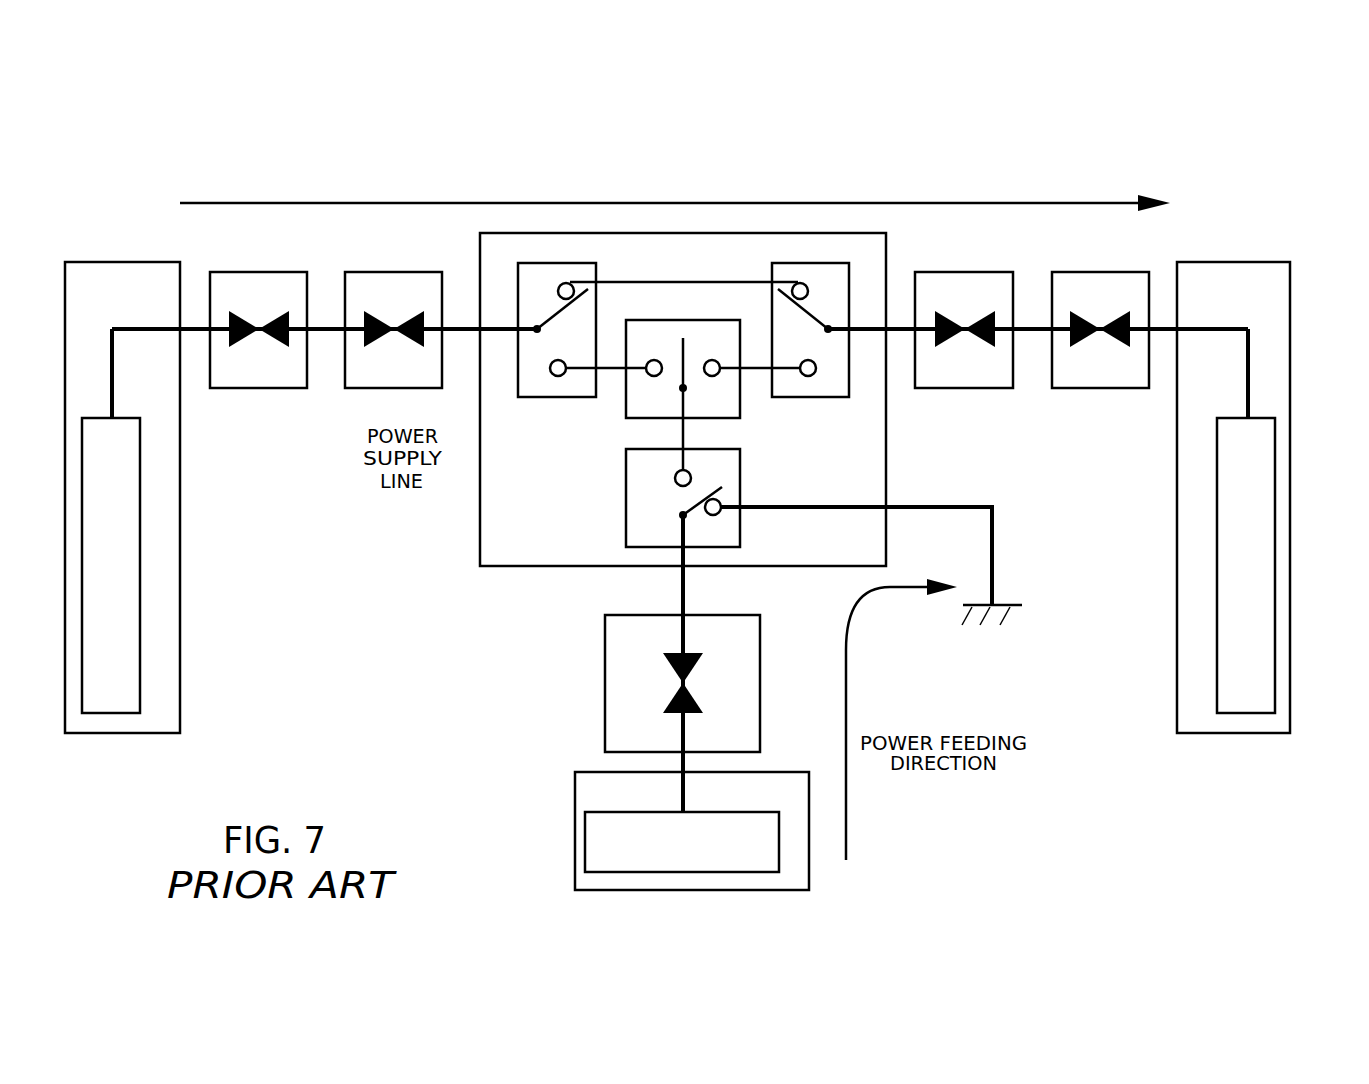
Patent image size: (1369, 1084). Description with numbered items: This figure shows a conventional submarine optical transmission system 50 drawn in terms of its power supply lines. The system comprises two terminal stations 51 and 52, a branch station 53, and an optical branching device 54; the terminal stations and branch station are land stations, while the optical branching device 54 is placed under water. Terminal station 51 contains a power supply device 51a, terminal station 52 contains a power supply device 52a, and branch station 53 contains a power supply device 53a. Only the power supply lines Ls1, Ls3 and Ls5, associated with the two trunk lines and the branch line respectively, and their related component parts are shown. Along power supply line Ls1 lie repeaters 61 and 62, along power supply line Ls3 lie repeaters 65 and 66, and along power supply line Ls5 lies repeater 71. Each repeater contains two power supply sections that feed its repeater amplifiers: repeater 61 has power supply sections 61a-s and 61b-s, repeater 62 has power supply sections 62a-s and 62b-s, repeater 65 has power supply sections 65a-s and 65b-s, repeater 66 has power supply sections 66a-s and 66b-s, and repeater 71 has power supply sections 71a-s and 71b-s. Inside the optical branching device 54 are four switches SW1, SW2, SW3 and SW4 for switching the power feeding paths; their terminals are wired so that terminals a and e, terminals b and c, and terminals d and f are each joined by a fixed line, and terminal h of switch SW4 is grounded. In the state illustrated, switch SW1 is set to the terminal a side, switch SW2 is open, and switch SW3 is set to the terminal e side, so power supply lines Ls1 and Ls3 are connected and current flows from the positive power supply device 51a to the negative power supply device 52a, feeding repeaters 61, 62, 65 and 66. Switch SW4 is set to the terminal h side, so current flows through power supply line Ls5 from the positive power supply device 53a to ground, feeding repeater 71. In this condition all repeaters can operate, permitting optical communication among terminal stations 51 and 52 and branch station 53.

The submarine optical transmission system 50 is at (680, 134).
The terminal station 51 is at (102, 262).
The power supply device 51a is at (160, 417).
The terminal station 52 is at (1188, 260).
The power supply device 52a is at (1215, 438).
The branch station 53 is at (605, 892).
The power supply device 53a is at (730, 810).
The optical branching device 54 is at (480, 509).
The repeater 61 is at (245, 272).
The power supply section 61a-s is at (242, 317).
The power supply section 61b-s is at (274, 338).
The repeater 62 is at (380, 272).
The power supply section 62a-s is at (379, 317).
The power supply section 62b-s is at (409, 338).
The repeater 65 is at (955, 272).
The power supply section 65a-s is at (948, 317).
The power supply section 65b-s is at (980, 338).
The repeater 66 is at (1090, 272).
The power supply section 66a-s is at (1084, 317).
The power supply section 66b-s is at (1115, 338).
The repeater 71 is at (762, 703).
The power supply section 71a-s is at (667, 704).
The power supply section 71b-s is at (700, 662).
The power supply line Ls1 is at (315, 331).
The power supply line Ls3 is at (1022, 331).
The power supply line Ls5 is at (682, 595).
The switch SW1 is at (586, 399).
The switch SW2 is at (626, 418).
The switch SW3 is at (817, 399).
The switch SW4 is at (624, 516).